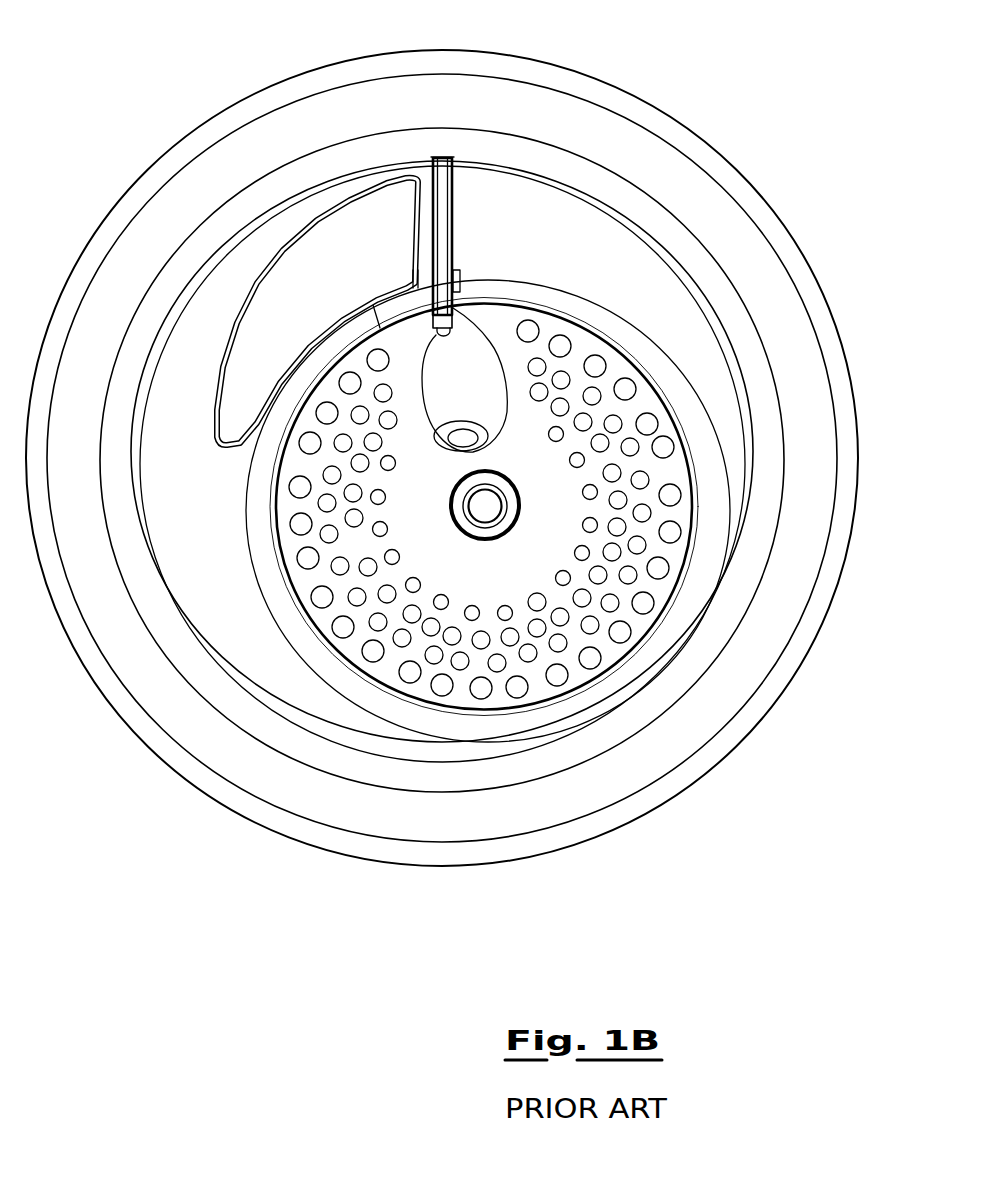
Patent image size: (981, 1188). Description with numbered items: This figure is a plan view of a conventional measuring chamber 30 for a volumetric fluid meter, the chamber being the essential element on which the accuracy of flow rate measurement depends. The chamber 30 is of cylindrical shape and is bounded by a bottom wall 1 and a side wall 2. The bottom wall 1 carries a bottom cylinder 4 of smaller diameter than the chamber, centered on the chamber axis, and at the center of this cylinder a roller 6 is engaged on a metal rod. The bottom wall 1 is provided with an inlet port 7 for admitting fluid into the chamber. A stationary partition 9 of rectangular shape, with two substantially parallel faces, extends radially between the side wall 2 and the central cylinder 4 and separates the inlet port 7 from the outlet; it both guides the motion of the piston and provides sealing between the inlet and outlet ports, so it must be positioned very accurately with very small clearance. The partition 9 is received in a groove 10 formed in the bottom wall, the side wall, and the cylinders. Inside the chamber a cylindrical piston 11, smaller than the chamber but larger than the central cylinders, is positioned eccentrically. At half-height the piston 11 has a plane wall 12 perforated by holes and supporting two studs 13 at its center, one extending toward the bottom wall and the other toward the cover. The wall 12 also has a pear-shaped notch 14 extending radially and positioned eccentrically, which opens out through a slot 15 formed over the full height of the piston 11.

The bottom wall 1 is at (215, 607).
The side wall 2 is at (760, 375).
The bottom cylinder 4 is at (542, 313).
The roller 6 is at (482, 438).
The inlet port 7 is at (290, 270).
The stationary partition 9 is at (446, 215).
The groove 10 is at (439, 157).
The piston 11 is at (609, 692).
The plane wall 12 is at (628, 573).
The studs 13 is at (503, 532).
The pear-shaped notch 14 is at (423, 413).
The slot 15 is at (430, 290).
The chamber 30 is at (443, 480).